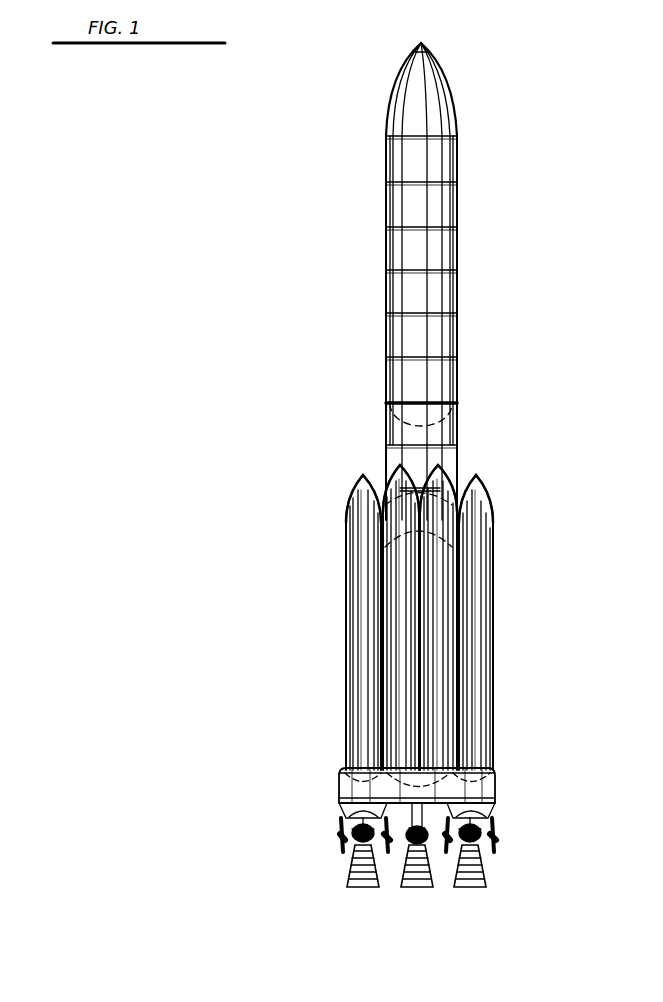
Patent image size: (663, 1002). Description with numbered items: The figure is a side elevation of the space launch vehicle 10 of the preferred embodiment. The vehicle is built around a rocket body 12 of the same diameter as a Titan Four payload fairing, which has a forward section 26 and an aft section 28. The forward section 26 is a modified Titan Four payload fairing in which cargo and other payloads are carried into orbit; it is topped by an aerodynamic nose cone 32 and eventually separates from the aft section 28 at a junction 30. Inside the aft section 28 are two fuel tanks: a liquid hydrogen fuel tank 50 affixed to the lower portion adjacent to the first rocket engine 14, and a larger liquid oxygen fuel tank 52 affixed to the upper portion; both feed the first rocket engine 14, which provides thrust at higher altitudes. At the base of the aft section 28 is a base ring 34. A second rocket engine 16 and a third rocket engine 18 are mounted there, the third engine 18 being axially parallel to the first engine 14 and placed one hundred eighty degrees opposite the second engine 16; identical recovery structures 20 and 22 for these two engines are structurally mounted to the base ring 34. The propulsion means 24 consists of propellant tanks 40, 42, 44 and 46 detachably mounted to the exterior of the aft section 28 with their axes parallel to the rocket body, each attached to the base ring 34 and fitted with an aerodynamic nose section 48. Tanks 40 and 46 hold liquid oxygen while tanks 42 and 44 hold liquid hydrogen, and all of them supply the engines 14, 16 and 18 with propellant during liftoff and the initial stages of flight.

The space launch vehicle 10 is at (338, 166).
The rocket body 12 is at (504, 433).
The first rocket engine 14 is at (425, 887).
The second rocket engine 16 is at (347, 879).
The third rocket engine 18 is at (487, 879).
The recovery structure 20 is at (500, 839).
The recovery structure 22 is at (335, 840).
The propulsion means 24 is at (478, 692).
The forward section 26 is at (466, 222).
The aft section 28 is at (500, 712).
The junction 30 is at (450, 402).
The aerodynamic nose cone 32 is at (446, 92).
The base ring 34 is at (483, 794).
The propellant tank 40 is at (365, 574).
The propellant tank 42 is at (402, 599).
The propellant tank 44 is at (440, 613).
The propellant tank 46 is at (470, 647).
The aerodynamic nose section 48 is at (354, 489).
The fuel tank 50 is at (396, 530).
The fuel tank 52 is at (390, 413).